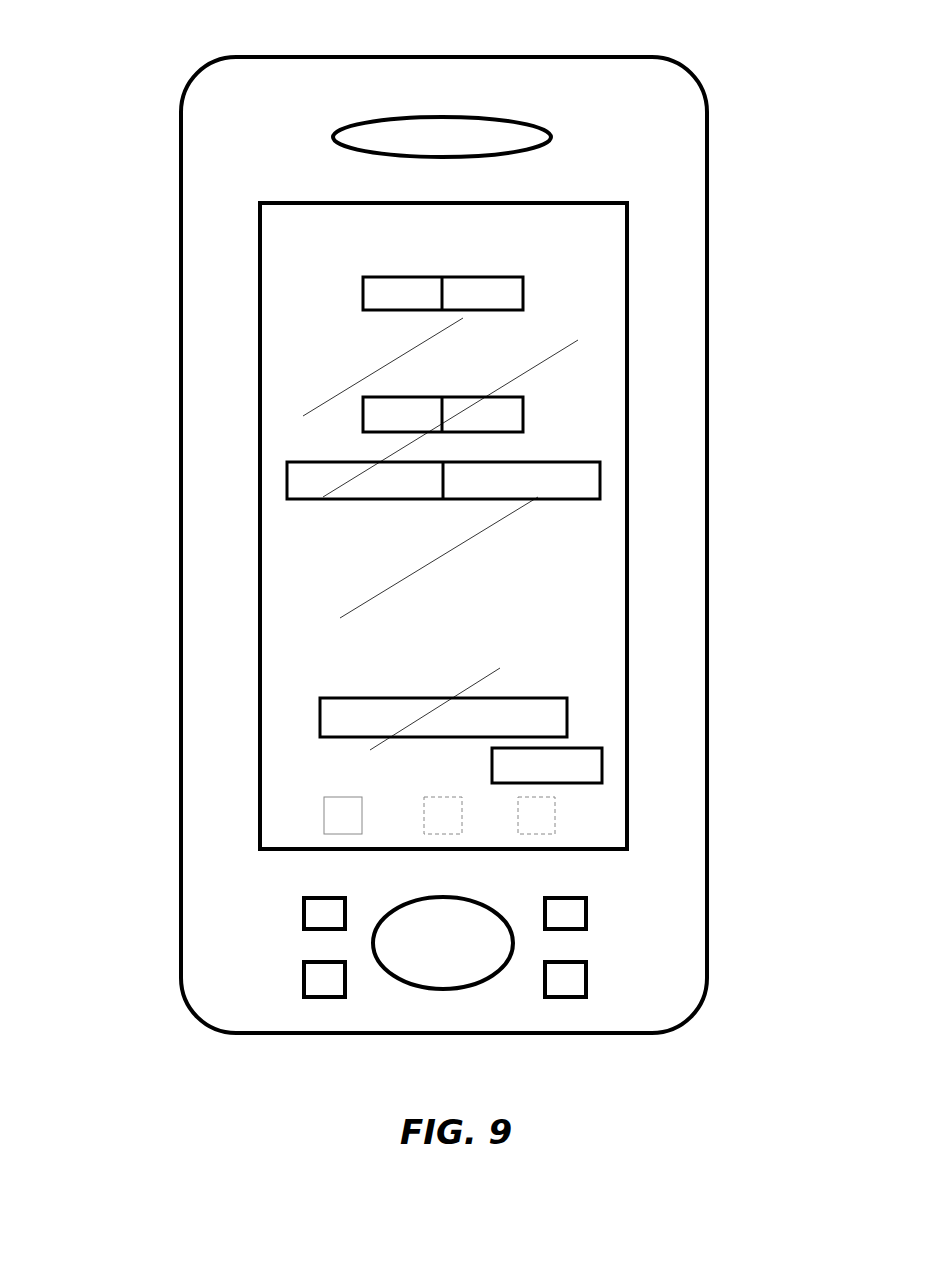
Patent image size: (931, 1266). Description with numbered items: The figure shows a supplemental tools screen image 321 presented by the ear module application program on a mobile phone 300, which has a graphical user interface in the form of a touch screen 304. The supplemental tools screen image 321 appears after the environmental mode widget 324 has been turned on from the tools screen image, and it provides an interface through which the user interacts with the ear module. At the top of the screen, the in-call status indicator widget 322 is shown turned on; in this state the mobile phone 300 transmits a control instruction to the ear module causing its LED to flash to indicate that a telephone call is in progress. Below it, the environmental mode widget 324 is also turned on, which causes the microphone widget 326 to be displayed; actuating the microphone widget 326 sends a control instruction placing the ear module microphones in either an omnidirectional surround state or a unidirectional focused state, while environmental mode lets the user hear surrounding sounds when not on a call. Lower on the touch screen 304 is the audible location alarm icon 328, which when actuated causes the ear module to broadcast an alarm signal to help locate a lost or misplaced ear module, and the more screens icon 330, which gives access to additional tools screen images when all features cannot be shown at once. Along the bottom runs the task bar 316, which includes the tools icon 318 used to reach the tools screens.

The mobile phone 300 is at (712, 50).
The touch screen 304 is at (613, 655).
The task bar 316 is at (638, 815).
The tools icon 318 is at (324, 812).
The supplemental tools screen image 321 is at (648, 346).
The in-call status indicator widget 322 is at (523, 293).
The environmental mode widget 324 is at (523, 415).
The microphone widget 326 is at (600, 481).
The audible location alarm icon 328 is at (567, 714).
The more screens icon 330 is at (602, 765).